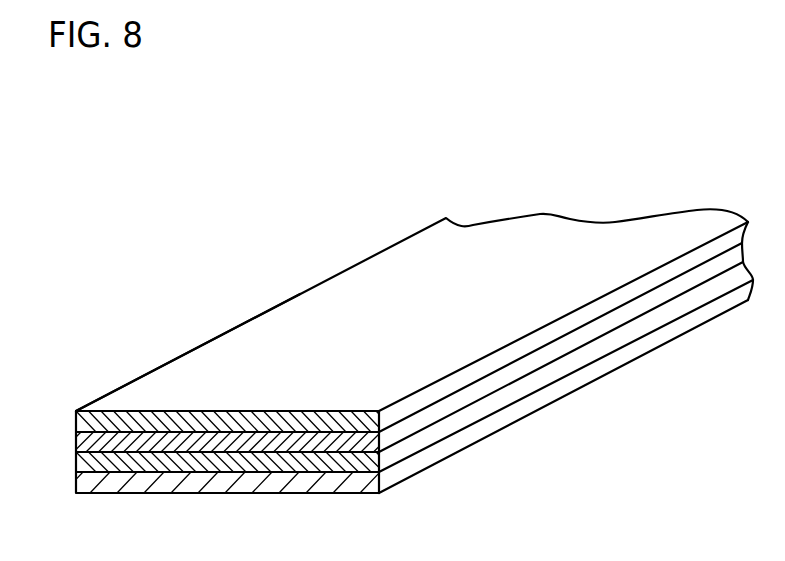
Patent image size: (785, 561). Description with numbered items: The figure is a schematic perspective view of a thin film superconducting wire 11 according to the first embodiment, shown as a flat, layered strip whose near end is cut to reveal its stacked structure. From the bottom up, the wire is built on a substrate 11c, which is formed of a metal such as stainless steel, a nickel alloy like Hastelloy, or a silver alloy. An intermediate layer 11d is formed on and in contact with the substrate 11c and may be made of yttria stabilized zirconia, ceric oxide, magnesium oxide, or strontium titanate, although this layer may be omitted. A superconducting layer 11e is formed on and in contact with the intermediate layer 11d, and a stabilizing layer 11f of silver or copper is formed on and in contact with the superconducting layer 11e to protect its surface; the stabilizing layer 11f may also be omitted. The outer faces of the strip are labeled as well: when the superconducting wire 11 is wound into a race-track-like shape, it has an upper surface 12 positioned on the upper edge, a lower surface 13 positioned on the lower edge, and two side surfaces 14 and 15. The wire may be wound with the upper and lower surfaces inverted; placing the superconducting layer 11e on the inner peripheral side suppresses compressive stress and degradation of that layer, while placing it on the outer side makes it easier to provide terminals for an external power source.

The thin film superconducting wire 11 is at (384, 302).
The upper surface 12 is at (580, 357).
The lower surface 13 is at (232, 330).
The side surface 14 is at (312, 312).
The side surface 15 is at (510, 427).
The substrate 11c is at (95, 482).
The intermediate layer 11d is at (95, 463).
The superconducting layer 11e is at (90, 442).
The stabilizing layer 11f is at (93, 423).